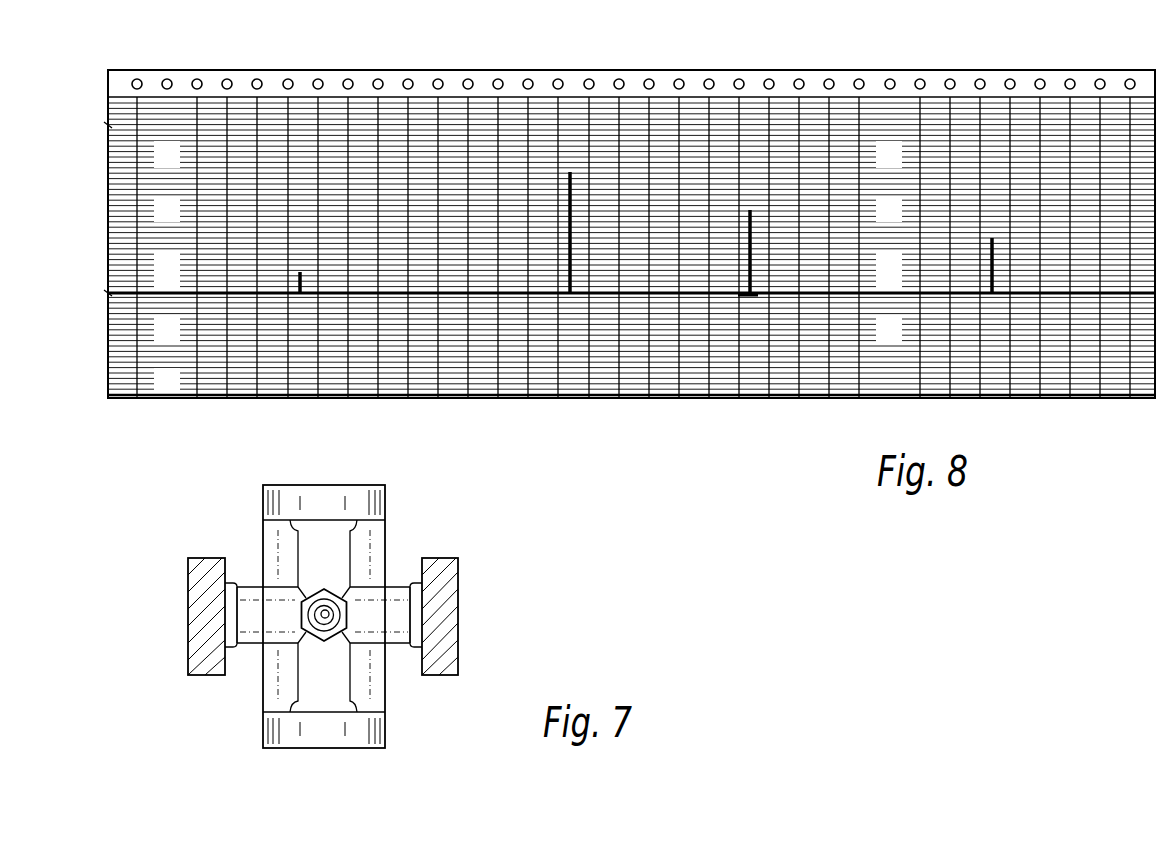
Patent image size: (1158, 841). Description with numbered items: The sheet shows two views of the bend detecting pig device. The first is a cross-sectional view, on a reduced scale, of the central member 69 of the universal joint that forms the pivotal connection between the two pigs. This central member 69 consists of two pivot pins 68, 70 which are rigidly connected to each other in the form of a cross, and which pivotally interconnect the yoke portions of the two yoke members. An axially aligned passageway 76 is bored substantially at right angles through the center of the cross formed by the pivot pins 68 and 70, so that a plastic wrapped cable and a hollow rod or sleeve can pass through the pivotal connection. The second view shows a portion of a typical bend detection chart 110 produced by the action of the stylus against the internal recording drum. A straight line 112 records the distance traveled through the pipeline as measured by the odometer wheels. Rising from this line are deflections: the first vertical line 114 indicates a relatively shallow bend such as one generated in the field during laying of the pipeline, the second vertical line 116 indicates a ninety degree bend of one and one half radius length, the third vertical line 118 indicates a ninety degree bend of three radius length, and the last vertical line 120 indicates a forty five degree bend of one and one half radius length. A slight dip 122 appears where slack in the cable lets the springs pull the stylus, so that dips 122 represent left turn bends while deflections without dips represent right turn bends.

In FIG. 8, the chart 110 is at (899, 55).
In FIG. 8, the straight line 112 is at (112, 294).
In FIG. 8, the first vertical line 114 is at (298, 274).
In FIG. 8, the second vertical line 116 is at (575, 172).
In FIG. 8, the third vertical line 118 is at (752, 212).
In FIG. 8, the last vertical line 120 is at (994, 240).
In FIG. 8, the dip 122 is at (744, 294).
In FIG. 7, the central member 69 is at (400, 536).
In FIG. 7, the pivot pin 70 is at (330, 556).
In FIG. 7, the pivot pin 68 is at (400, 622).
In FIG. 7, the passageway 76 is at (345, 607).